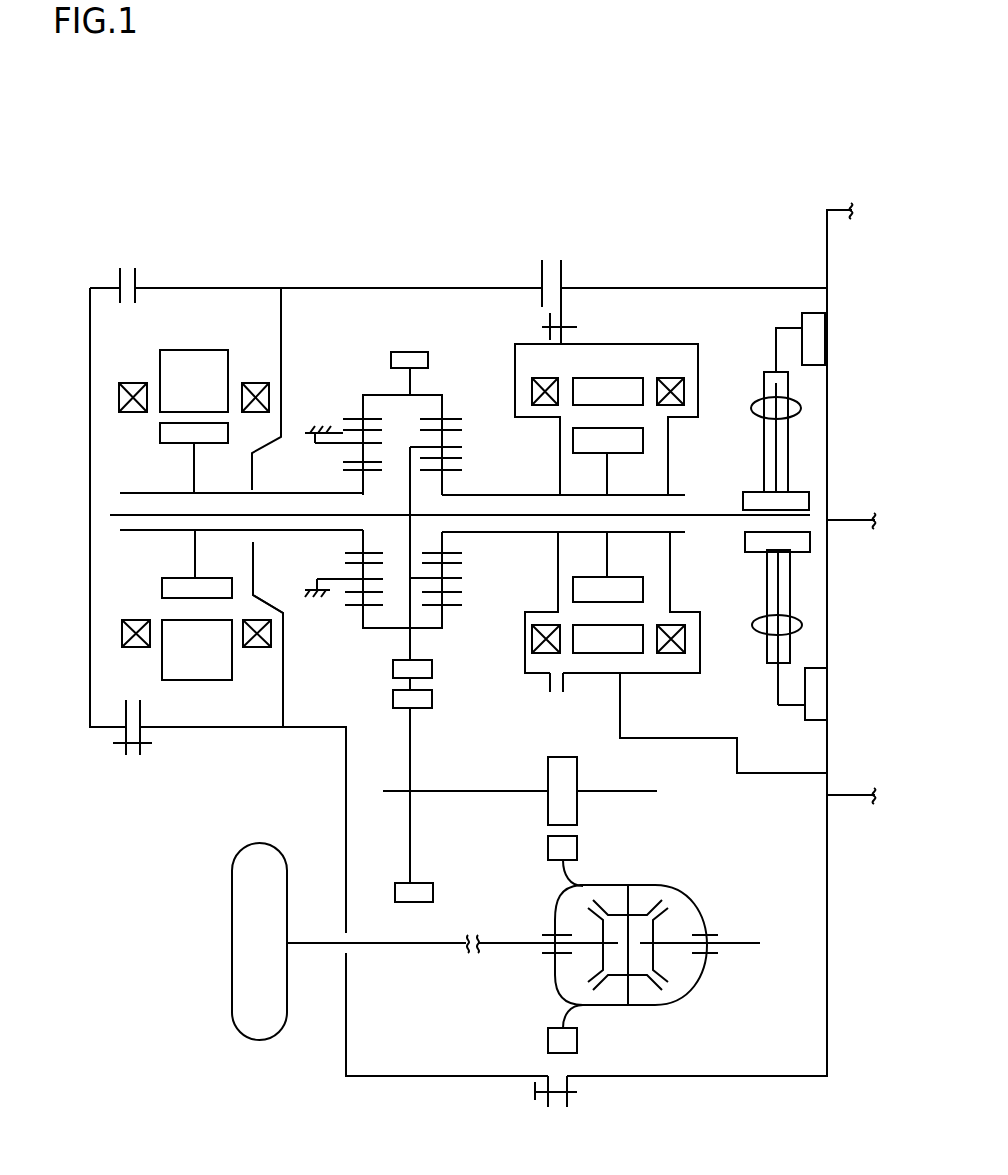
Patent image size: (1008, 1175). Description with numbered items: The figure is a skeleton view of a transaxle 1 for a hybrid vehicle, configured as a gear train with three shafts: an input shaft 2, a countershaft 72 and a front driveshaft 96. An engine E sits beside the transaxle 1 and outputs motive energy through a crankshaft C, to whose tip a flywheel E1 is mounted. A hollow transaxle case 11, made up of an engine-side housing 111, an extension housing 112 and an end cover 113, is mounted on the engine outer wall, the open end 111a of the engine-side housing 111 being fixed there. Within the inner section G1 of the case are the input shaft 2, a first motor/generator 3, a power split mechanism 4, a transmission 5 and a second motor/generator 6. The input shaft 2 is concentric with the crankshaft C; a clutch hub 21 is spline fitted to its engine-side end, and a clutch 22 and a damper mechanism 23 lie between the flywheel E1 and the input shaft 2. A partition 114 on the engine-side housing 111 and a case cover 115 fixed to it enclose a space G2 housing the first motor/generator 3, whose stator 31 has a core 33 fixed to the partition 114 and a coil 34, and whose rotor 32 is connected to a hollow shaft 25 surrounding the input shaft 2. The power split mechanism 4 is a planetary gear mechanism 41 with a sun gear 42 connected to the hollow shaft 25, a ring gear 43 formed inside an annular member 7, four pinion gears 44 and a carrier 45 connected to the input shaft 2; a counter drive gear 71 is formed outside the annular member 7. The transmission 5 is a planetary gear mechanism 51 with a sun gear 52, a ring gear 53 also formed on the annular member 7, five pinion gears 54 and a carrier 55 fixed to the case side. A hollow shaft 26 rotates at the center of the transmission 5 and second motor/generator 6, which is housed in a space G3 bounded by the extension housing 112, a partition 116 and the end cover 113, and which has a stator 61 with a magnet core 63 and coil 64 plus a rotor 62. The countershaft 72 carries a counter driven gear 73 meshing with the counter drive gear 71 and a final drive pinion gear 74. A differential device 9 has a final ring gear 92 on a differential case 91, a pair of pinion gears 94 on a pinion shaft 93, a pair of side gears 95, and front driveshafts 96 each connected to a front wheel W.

The transaxle 1 is at (93, 263).
The input shaft 2 is at (692, 512).
The first motor/generator 3 is at (698, 630).
The power split mechanism 4 is at (450, 379).
The transmission 5 is at (371, 638).
The second motor/generator 6 is at (149, 440).
The annular member 7 is at (382, 394).
The differential device 9 is at (700, 997).
The transaxle case 11 is at (400, 281).
The clutch hub 21 is at (752, 492).
The clutch 22 is at (805, 712).
The damper mechanism 23 is at (763, 638).
The hollow shaft 25 is at (529, 534).
The hollow shaft 26 is at (143, 531).
The stator 31 is at (645, 655).
The rotor 32 is at (617, 453).
The core 33 is at (630, 624).
The coil 34 is at (672, 378).
The planetary gear mechanism 41 is at (461, 626).
The sun gear 42 is at (462, 554).
The ring gear 43 is at (462, 426).
The pinion gears 44 is at (462, 465).
The carrier 45 is at (462, 579).
The planetary gear mechanism 51 is at (330, 565).
The sun gear 52 is at (343, 463).
The ring gear 53 is at (376, 606).
The pinion gears 54 is at (345, 560).
The carrier 55 is at (343, 420).
The stator 61 is at (201, 682).
The rotor 62 is at (180, 446).
The magnet core 63 is at (228, 668).
The coil 64 is at (133, 382).
The counter drive gear 71 is at (425, 672).
The countershaft 72 is at (594, 791).
The counter driven gear 73 is at (430, 883).
The final drive pinion gear 74 is at (547, 768).
The differential case 91 is at (660, 884).
The final ring gear 92 is at (547, 1040).
The pinion shaft 93 is at (630, 884).
The pinion gears 94 is at (607, 905).
The side gears 95 is at (700, 902).
The front driveshaft 96 is at (510, 940).
The engine-side housing 111 is at (645, 286).
The open end 111a is at (822, 737).
The extension housing 112 is at (205, 284).
The end cover 113 is at (89, 640).
The partition 114 is at (688, 677).
The case cover 115 is at (514, 372).
The partition 116 is at (283, 326).
The engine E is at (814, 263).
The flywheel E1 is at (829, 633).
The crankshaft C is at (845, 518).
The front wheel W is at (262, 846).
The inner section G1 is at (747, 816).
The space G2 is at (607, 726).
The space G3 is at (230, 688).